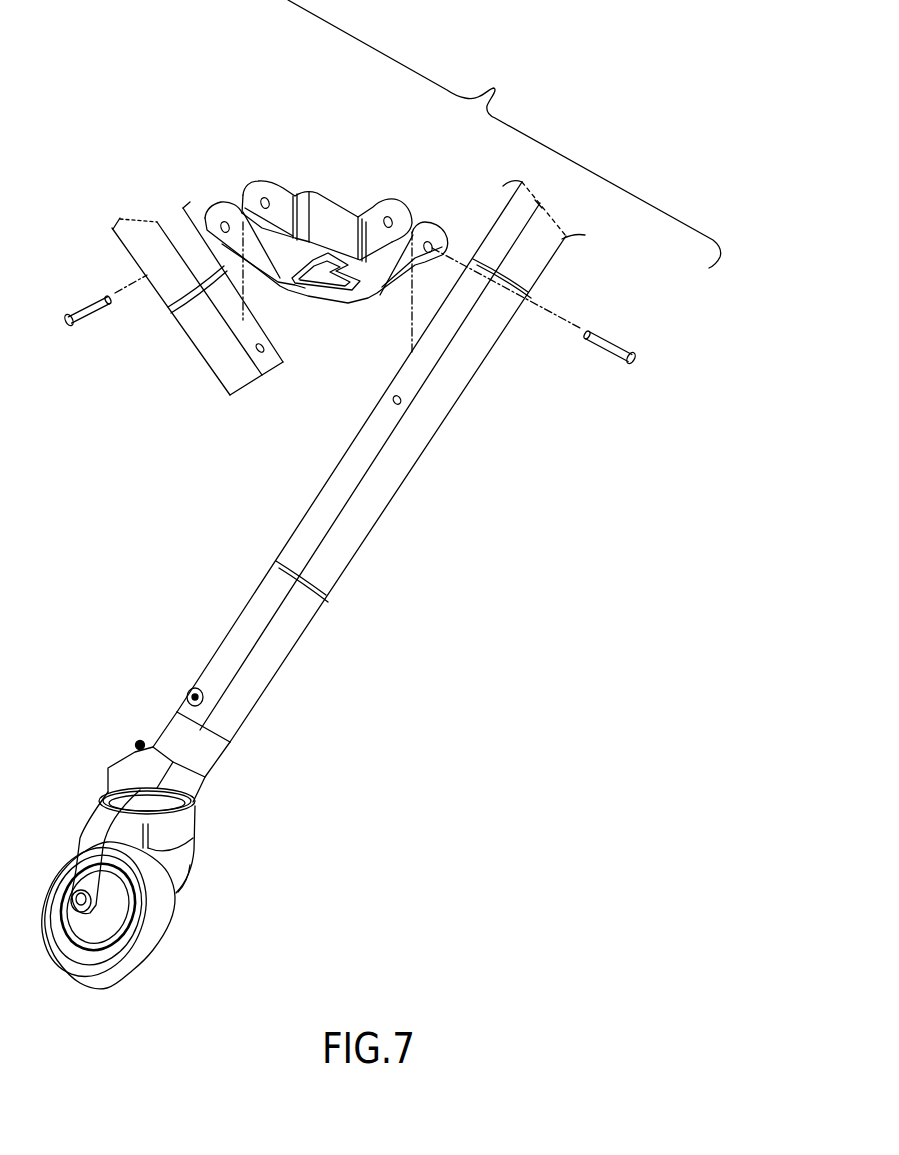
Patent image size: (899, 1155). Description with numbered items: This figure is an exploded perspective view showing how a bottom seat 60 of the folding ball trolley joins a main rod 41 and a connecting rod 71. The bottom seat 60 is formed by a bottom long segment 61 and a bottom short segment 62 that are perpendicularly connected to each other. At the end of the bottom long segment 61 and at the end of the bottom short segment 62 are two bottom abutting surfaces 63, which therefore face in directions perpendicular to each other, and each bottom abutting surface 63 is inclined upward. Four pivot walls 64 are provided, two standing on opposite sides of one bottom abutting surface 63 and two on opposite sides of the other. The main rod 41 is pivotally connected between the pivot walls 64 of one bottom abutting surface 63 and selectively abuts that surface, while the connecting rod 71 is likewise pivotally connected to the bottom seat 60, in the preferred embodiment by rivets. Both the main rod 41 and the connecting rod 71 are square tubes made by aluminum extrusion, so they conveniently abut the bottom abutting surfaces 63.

The main rod 41 is at (360, 528).
The bottom seat 60 is at (327, 238).
The bottom long segment 61 is at (228, 190).
The bottom short segment 62 is at (434, 203).
The bottom abutting surface 63 is at (280, 268).
The pivot wall 64 is at (380, 198).
The connecting rod 71 is at (207, 340).